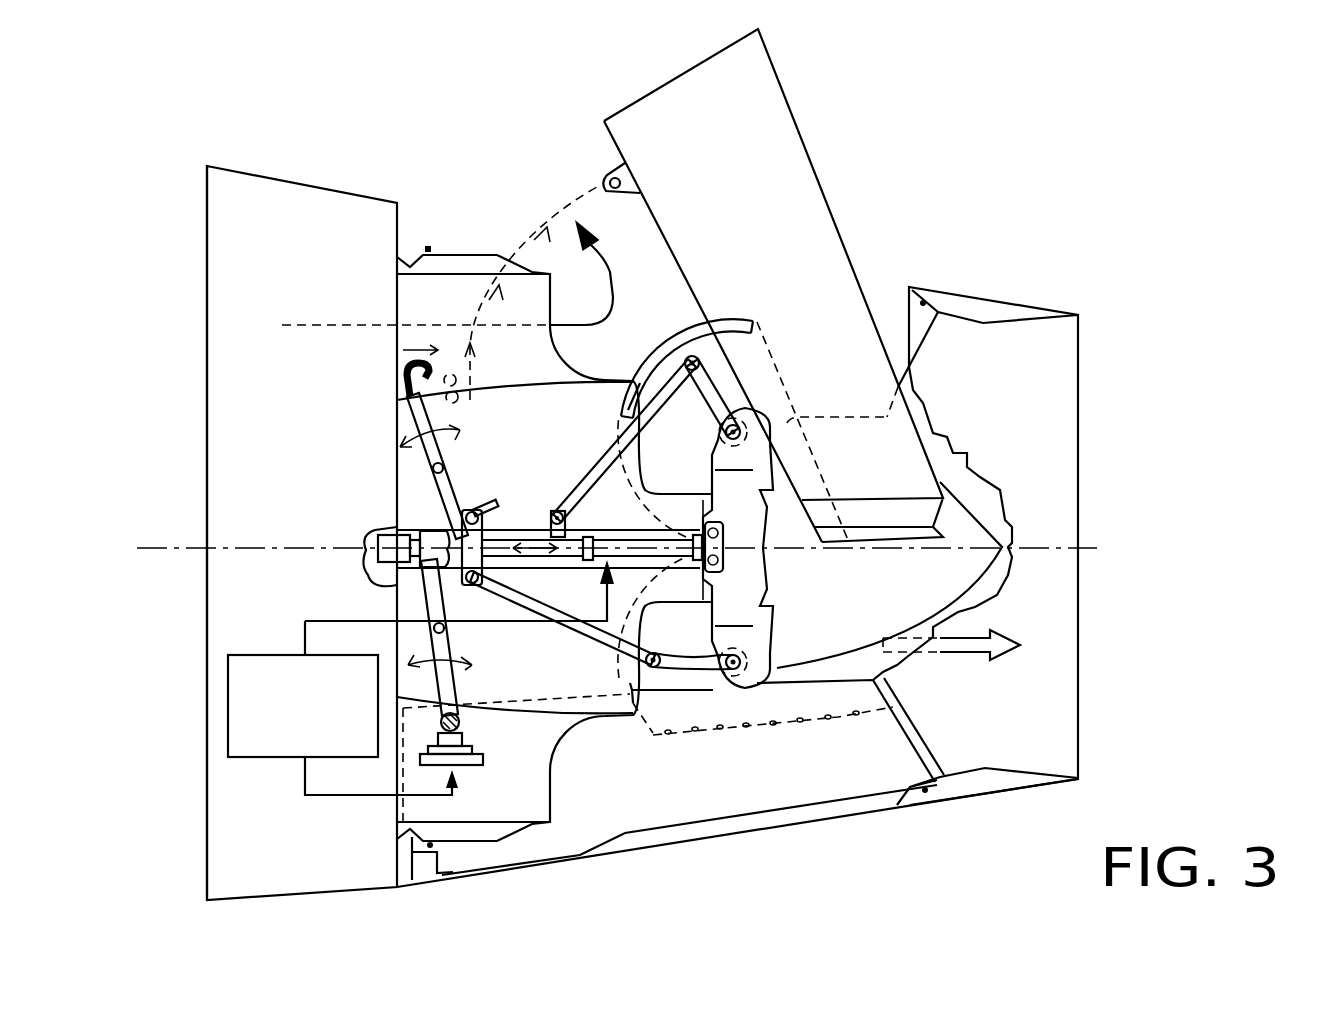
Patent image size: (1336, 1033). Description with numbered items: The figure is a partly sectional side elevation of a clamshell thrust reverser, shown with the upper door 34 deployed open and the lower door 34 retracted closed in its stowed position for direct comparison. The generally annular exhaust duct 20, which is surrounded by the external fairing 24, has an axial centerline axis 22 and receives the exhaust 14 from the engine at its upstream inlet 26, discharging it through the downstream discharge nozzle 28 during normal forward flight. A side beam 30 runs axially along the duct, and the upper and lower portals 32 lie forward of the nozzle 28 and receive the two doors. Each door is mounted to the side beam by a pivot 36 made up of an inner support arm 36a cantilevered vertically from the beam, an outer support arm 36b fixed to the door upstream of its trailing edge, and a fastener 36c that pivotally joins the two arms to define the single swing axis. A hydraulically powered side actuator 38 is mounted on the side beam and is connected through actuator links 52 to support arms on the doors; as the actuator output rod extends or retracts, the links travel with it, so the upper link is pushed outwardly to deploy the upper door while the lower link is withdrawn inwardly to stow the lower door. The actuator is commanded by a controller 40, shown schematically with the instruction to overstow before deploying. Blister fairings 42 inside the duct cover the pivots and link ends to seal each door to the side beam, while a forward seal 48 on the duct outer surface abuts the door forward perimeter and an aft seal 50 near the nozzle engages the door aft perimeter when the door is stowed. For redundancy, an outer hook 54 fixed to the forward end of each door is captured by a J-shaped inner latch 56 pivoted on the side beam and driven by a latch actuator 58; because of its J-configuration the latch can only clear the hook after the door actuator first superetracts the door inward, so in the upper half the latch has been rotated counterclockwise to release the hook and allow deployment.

The common exhaust stream 14 is at (617, 267).
The exhaust duct 20 is at (502, 370).
The axial centerline axis 22 is at (1065, 547).
The external fairing 24 is at (297, 183).
The inlet 26 is at (207, 598).
The discharge nozzle 28 is at (987, 417).
The side beam 30 is at (500, 443).
The portal 32 is at (593, 361).
The thrust reverser door 34 is at (722, 223).
The pivot 36 is at (768, 453).
The inner support arm 36a is at (740, 490).
The outer support arm 36b is at (737, 410).
The fastener 36c is at (741, 427).
The side actuator 38 is at (507, 540).
The controller 40 is at (270, 655).
The blister fairing 42 is at (660, 464).
The forward seal 48 is at (428, 247).
The aft seal 50 is at (920, 300).
The actuator link 52 is at (590, 478).
The outer hook 54 is at (608, 172).
The inner latch 56 is at (410, 412).
The latch actuator 58 is at (387, 537).